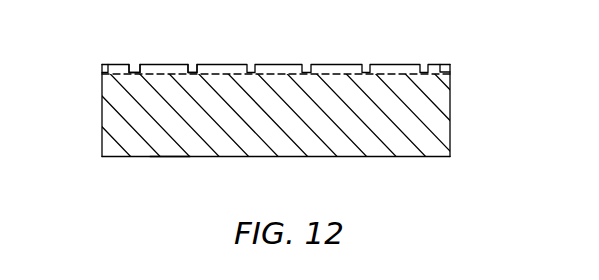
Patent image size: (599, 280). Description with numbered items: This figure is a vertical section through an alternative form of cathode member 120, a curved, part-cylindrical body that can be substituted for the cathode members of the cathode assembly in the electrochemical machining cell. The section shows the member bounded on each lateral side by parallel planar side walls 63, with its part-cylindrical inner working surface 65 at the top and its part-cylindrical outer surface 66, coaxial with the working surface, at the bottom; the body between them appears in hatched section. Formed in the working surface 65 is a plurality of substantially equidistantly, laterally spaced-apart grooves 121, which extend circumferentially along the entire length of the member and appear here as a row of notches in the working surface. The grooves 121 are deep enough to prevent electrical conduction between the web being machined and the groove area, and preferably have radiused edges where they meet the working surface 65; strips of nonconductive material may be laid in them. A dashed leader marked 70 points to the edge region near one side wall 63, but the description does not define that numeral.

The side wall 63 is at (102, 115).
The working surface 65 is at (327, 65).
The outer surface 66 is at (415, 156).
The edge region 70 is at (118, 65).
The cathode member 120 is at (170, 157).
The grooves 121 is at (192, 66).